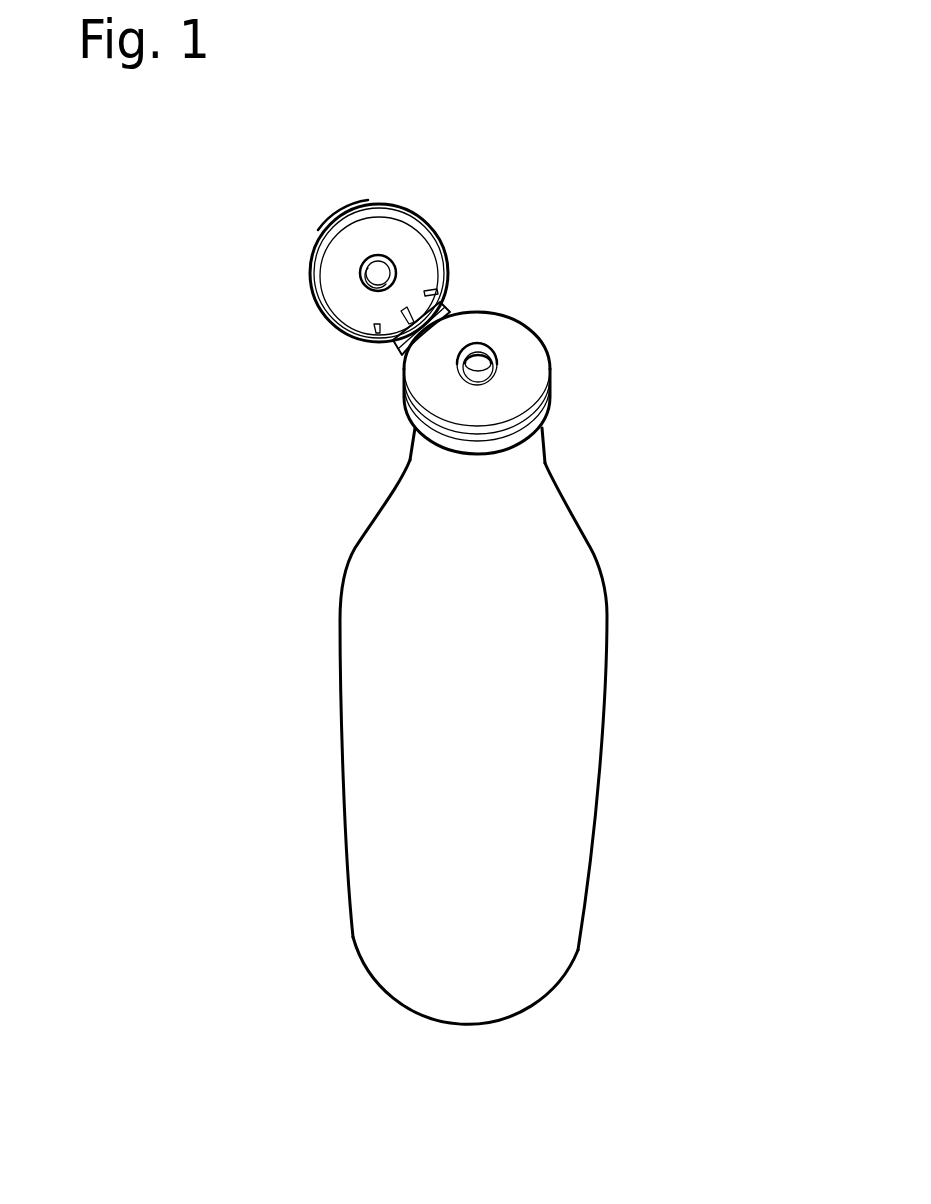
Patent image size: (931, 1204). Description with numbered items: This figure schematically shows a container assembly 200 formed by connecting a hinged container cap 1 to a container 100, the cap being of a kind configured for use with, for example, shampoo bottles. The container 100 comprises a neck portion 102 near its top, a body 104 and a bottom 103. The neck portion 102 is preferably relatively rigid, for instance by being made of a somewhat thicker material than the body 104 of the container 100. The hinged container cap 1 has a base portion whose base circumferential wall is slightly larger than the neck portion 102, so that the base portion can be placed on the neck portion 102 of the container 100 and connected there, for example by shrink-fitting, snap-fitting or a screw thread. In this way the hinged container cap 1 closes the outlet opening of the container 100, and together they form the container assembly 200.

The hinged container cap 1 is at (493, 253).
The container 100 is at (598, 513).
The neck portion 102 is at (443, 463).
The bottom 103 is at (417, 1012).
The body 104 is at (372, 757).
The container assembly 200 is at (275, 345).